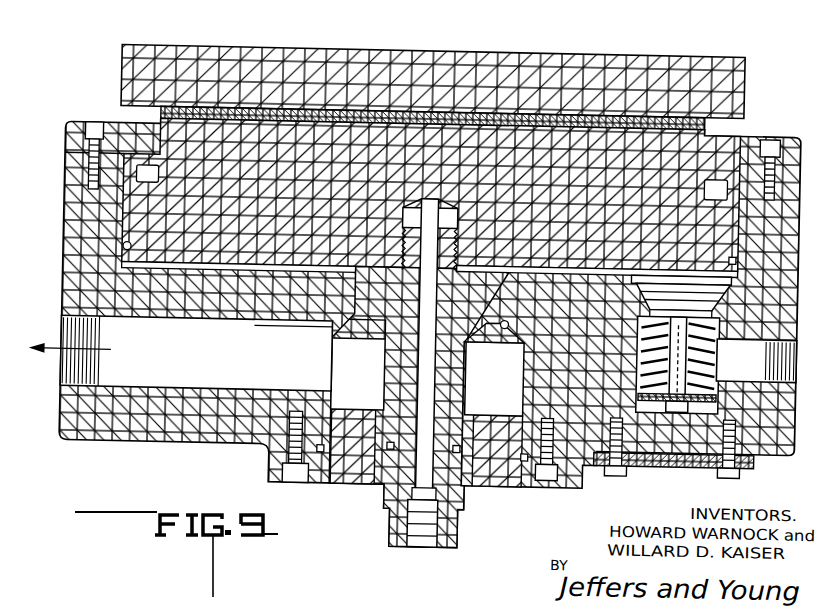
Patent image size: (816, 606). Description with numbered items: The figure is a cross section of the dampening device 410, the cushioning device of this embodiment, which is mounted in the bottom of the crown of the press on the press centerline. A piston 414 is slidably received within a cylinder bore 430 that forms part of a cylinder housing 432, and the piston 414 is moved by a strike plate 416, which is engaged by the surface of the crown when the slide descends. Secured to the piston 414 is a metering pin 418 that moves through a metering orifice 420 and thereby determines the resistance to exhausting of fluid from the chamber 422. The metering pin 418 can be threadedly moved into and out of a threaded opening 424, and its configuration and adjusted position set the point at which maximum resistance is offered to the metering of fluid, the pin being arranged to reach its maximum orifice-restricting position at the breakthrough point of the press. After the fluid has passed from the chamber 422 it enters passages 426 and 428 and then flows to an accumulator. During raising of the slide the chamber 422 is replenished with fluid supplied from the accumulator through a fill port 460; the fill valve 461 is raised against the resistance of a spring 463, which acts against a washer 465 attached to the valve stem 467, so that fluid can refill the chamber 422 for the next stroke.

The dampening device 410 is at (753, 126).
The piston 414 is at (557, 120).
The strike plate 416 is at (308, 51).
The metering pin 418 is at (477, 272).
The metering orifice 420 is at (509, 320).
The chamber 422 is at (553, 268).
The threaded opening 424 is at (400, 233).
The passage 426 is at (516, 370).
The passage 428 is at (194, 393).
The cylinder bore 430 is at (125, 229).
The cylinder housing 432 is at (78, 170).
The fill port 460 is at (707, 301).
The fill valve 461 is at (667, 300).
The spring 463 is at (641, 331).
The washer 465 is at (682, 400).
The valve stem 467 is at (639, 376).